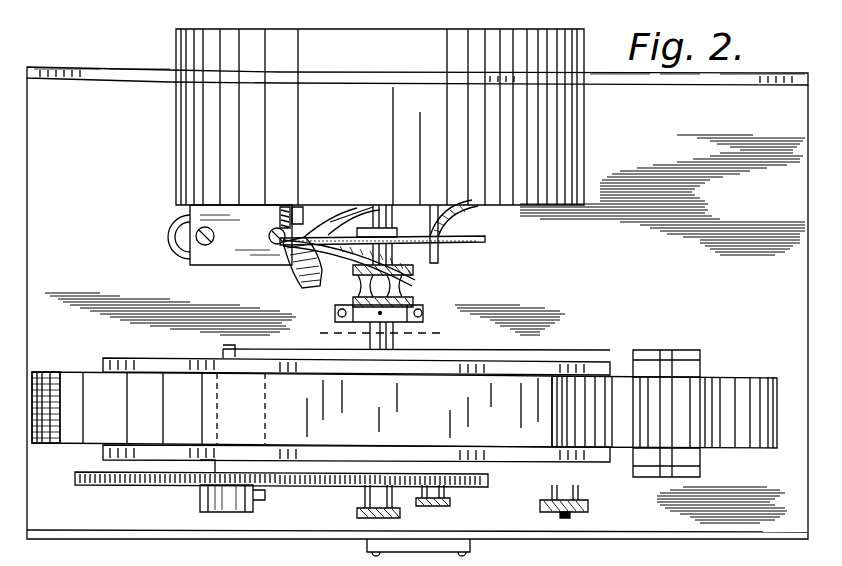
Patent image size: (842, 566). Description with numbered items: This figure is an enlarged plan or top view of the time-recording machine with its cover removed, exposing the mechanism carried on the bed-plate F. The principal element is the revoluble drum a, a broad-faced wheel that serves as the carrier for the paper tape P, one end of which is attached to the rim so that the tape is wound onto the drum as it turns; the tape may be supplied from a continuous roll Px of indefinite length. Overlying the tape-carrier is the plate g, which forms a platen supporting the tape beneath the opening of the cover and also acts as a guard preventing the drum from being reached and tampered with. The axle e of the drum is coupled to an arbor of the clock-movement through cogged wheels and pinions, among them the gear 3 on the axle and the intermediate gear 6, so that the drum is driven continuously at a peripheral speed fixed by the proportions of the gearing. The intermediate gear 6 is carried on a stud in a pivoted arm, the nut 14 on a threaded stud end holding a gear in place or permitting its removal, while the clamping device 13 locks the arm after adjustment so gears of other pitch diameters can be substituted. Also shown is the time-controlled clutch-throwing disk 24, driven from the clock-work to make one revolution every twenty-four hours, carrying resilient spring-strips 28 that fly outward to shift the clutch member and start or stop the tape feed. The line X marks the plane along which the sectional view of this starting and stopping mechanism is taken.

The bed-plate F is at (206, 235).
The spring-strips 28 is at (300, 266).
The disk 24 is at (490, 226).
The line x—x X is at (377, 334).
The paper tape P is at (465, 385).
The continuous roll Px is at (748, 378).
The drum a is at (62, 372).
The plate g is at (225, 372).
The gear 3 is at (142, 488).
The axle e is at (228, 512).
The nut 14 is at (357, 513).
The intermediate gear 6 is at (470, 482).
The clamping device 13 is at (590, 506).